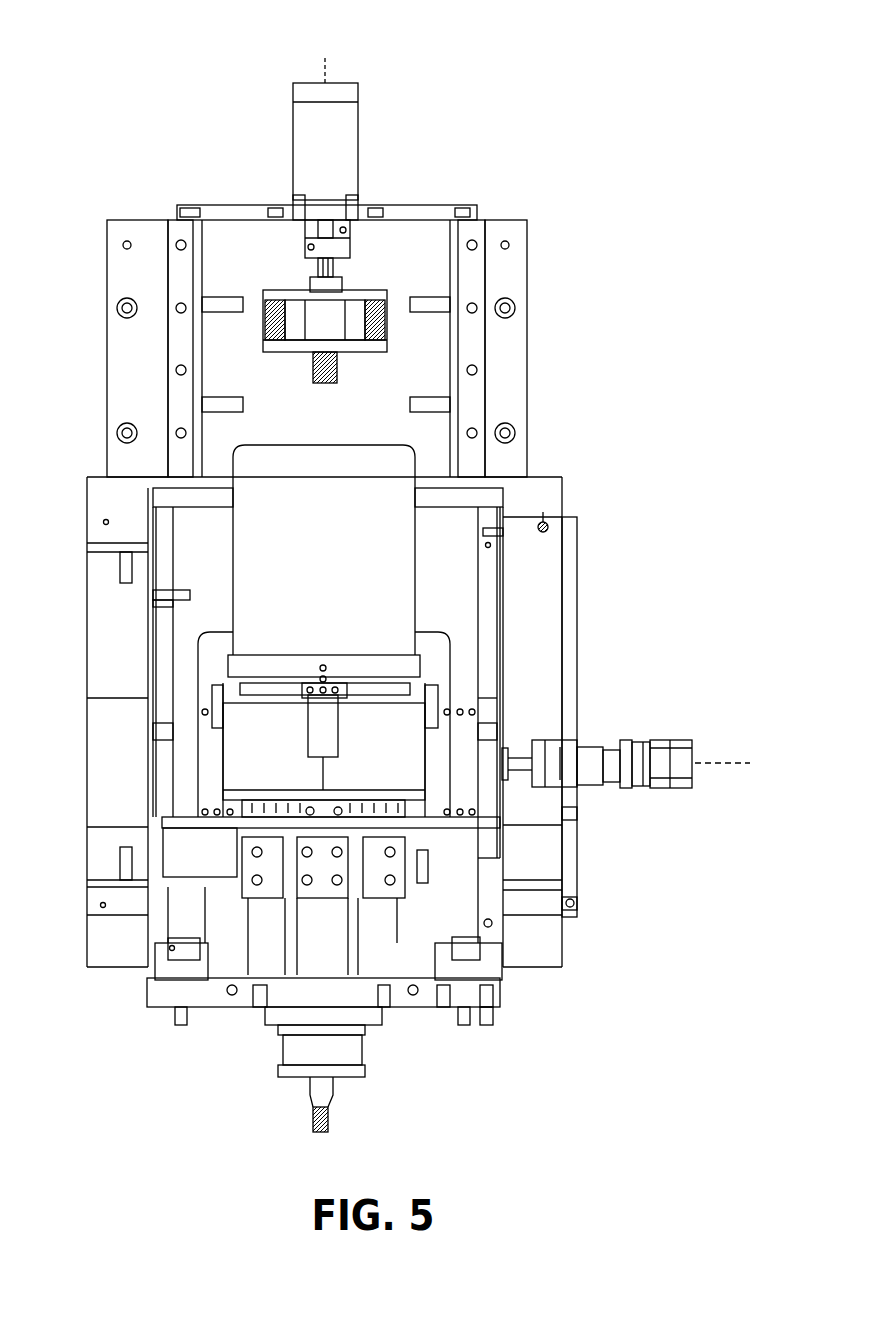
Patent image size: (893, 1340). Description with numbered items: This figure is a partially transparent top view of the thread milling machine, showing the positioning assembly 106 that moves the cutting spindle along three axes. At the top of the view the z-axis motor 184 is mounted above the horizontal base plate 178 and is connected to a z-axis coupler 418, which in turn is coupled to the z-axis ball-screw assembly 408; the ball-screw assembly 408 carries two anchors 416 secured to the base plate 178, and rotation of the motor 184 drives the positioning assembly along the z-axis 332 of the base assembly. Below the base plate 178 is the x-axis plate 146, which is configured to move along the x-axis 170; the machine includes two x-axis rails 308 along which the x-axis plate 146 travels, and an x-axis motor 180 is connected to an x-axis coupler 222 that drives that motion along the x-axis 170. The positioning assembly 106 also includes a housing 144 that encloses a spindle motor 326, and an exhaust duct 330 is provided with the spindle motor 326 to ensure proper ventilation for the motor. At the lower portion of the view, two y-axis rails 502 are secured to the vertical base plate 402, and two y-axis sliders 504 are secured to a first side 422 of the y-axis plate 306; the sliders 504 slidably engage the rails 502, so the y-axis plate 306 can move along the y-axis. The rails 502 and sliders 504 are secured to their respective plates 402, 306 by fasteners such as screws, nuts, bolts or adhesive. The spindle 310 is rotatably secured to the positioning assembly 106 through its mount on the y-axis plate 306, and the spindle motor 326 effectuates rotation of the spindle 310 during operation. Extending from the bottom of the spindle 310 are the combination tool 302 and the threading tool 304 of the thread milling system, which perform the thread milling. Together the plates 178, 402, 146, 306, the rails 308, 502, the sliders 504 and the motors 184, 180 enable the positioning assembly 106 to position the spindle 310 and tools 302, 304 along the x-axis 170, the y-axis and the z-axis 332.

The positioning assembly 106 is at (104, 177).
The z-axis 332 is at (322, 75).
The z-axis motor 184 is at (360, 152).
The horizontal base plate 178 is at (435, 228).
The z-axis coupler 418 is at (352, 232).
The anchors 416 is at (372, 333).
The z-axis ball-screw assembly 408 is at (312, 366).
The exhaust duct 330 is at (360, 458).
The x-axis plate 146 is at (553, 497).
The x-axis rails 308 is at (565, 528).
The housing 144 is at (505, 630).
The spindle motor 326 is at (252, 715).
The x-axis coupler 222 is at (585, 748).
The x-axis motor 180 is at (655, 745).
The x-axis 170 is at (705, 753).
The vertical base plate 402 is at (490, 875).
The y-axis rails 502 is at (165, 950).
The y-axis sliders 504 is at (172, 998).
The y-axis plate 306 is at (416, 1012).
The first side 422 is at (466, 1020).
The spindle 310 is at (367, 1058).
The combination tool 302 is at (335, 1100).
The threading tool 304 is at (308, 1125).